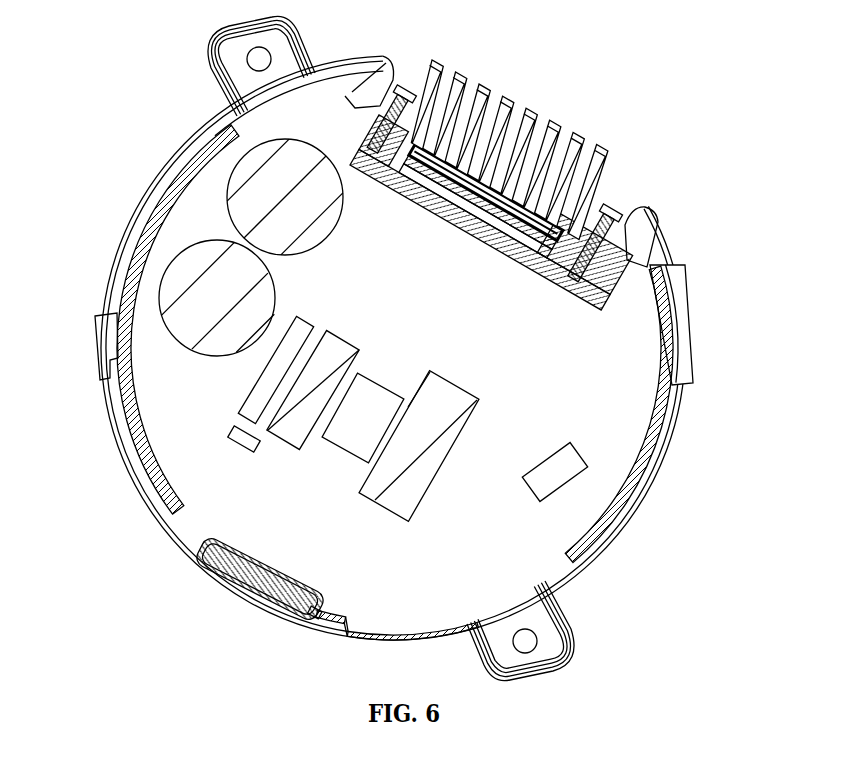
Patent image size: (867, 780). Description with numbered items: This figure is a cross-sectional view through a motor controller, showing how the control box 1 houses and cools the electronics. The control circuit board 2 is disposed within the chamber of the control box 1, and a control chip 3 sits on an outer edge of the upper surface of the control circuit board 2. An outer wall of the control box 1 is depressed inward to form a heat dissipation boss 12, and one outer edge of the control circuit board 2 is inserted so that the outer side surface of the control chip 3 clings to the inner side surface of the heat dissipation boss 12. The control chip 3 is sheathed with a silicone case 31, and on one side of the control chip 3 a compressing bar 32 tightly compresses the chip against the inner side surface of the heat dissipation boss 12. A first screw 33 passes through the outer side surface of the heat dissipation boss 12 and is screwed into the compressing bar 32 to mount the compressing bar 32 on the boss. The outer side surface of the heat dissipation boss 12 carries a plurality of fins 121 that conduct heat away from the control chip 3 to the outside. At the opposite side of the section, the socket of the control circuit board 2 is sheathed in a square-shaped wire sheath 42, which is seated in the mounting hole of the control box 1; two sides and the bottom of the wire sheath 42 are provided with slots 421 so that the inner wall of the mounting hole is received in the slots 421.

The control box 1 is at (640, 472).
The control circuit board 2 is at (177, 445).
The heat dissipation boss 12 is at (613, 240).
The fins 121 is at (553, 113).
The control chip 3 is at (455, 152).
The silicone case 31 is at (422, 154).
The compressing bar 32 is at (580, 293).
The first screw 33 is at (395, 120).
The wire sheath 42 is at (247, 585).
The slots 421 is at (316, 620).